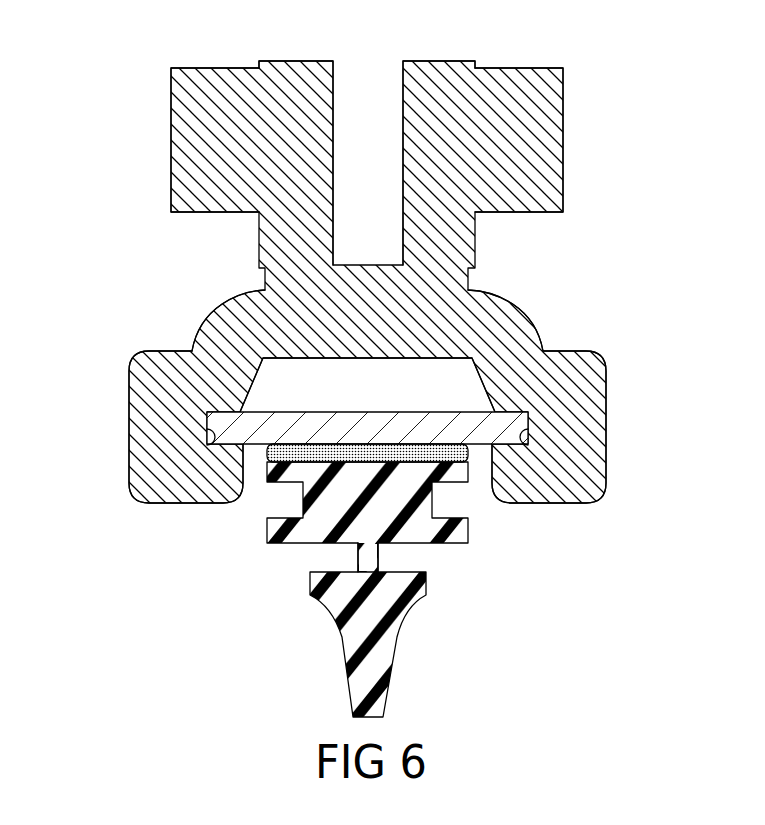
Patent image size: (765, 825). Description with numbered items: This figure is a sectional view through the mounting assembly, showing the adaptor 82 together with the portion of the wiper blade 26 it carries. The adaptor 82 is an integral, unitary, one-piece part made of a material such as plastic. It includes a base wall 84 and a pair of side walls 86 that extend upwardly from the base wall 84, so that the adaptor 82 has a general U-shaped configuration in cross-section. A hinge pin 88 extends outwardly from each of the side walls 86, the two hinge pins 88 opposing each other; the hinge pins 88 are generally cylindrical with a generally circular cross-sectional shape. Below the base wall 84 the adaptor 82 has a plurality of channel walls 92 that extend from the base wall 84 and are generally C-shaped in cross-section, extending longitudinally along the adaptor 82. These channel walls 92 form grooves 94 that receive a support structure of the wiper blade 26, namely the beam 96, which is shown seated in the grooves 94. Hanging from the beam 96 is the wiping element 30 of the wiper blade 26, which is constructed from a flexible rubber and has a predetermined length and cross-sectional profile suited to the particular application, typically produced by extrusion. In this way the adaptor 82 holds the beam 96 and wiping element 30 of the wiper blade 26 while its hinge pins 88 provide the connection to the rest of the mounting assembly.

The wiper blade 26 is at (480, 539).
The wiping element 30 is at (367, 692).
The adaptor 82 is at (572, 147).
The base wall 84 is at (372, 320).
The side walls 86 is at (295, 67).
The hinge pins 88 is at (222, 85).
The channel walls 92 is at (140, 425).
The grooves 94 is at (222, 434).
The beam 96 is at (271, 448).